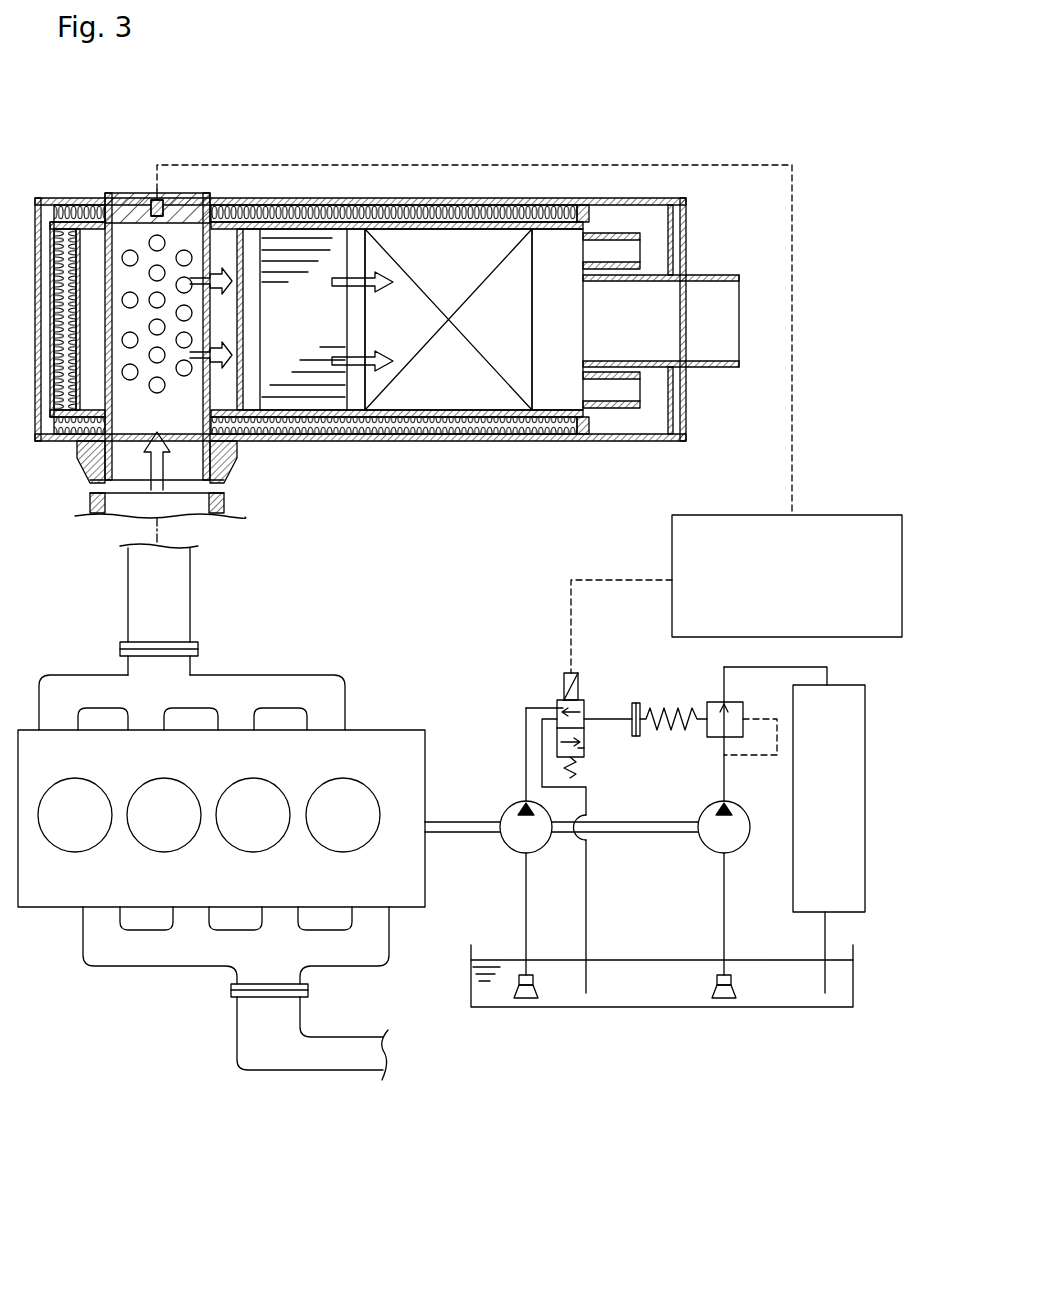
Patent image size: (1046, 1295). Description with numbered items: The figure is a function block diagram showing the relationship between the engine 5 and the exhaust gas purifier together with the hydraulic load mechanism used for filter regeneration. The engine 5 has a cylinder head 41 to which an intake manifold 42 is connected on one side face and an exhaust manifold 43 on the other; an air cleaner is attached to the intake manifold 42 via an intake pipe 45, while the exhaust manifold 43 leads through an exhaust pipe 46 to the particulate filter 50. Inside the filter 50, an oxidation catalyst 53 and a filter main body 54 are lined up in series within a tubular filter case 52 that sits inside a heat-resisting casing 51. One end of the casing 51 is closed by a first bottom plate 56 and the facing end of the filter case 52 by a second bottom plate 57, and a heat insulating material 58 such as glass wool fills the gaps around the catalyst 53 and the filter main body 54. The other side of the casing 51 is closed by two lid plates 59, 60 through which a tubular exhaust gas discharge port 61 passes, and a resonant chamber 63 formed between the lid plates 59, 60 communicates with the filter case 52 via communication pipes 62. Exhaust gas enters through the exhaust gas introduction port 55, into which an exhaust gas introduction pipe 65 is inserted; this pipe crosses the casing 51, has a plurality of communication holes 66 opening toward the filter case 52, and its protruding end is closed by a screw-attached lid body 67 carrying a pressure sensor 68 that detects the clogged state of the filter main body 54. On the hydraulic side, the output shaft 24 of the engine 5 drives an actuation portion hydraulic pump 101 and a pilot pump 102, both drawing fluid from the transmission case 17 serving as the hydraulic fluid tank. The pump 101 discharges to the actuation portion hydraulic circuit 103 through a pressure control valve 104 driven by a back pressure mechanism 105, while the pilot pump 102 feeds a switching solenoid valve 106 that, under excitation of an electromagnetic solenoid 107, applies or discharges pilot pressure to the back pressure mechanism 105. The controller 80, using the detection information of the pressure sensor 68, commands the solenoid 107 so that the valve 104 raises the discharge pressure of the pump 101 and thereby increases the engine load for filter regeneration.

The particulate filter 50 is at (90, 196).
The casing 51 is at (521, 212).
The filter case 52 is at (462, 428).
The oxidation catalyst 53 is at (326, 250).
The filter main body 54 is at (435, 268).
The exhaust gas introduction port 55 is at (123, 488).
The first bottom plate 56 is at (40, 432).
The second bottom plate 57 is at (64, 302).
The heat insulating material 58 is at (358, 416).
The lid plate 59 is at (590, 417).
The lid plate 60 is at (677, 232).
The exhaust gas discharge port 61 is at (712, 368).
The communication pipes 62 is at (643, 408).
The resonant chamber 63 is at (630, 222).
The exhaust gas introduction pipe 65 is at (192, 446).
The communication holes 66 is at (128, 372).
The lid body 67 is at (128, 192).
The pressure sensor 68 is at (164, 198).
The controller 80 is at (693, 553).
The engine 5 is at (370, 742).
The cylinder head 41 is at (229, 776).
The intake manifold 42 is at (160, 950).
The exhaust manifold 43 is at (240, 700).
The intake pipe 45 is at (313, 1052).
The exhaust pipe 46 is at (158, 592).
The output shaft 24 is at (457, 832).
The actuation portion hydraulic pump 101 is at (718, 837).
The pilot pump 102 is at (506, 812).
The actuation portion hydraulic circuit 103 is at (866, 762).
The pressure control valve 104 is at (712, 704).
The back pressure mechanism 105 is at (672, 750).
The switching solenoid valve 106 is at (557, 712).
The electromagnetic solenoid 107 is at (578, 680).
The transmission case 17 is at (622, 1008).